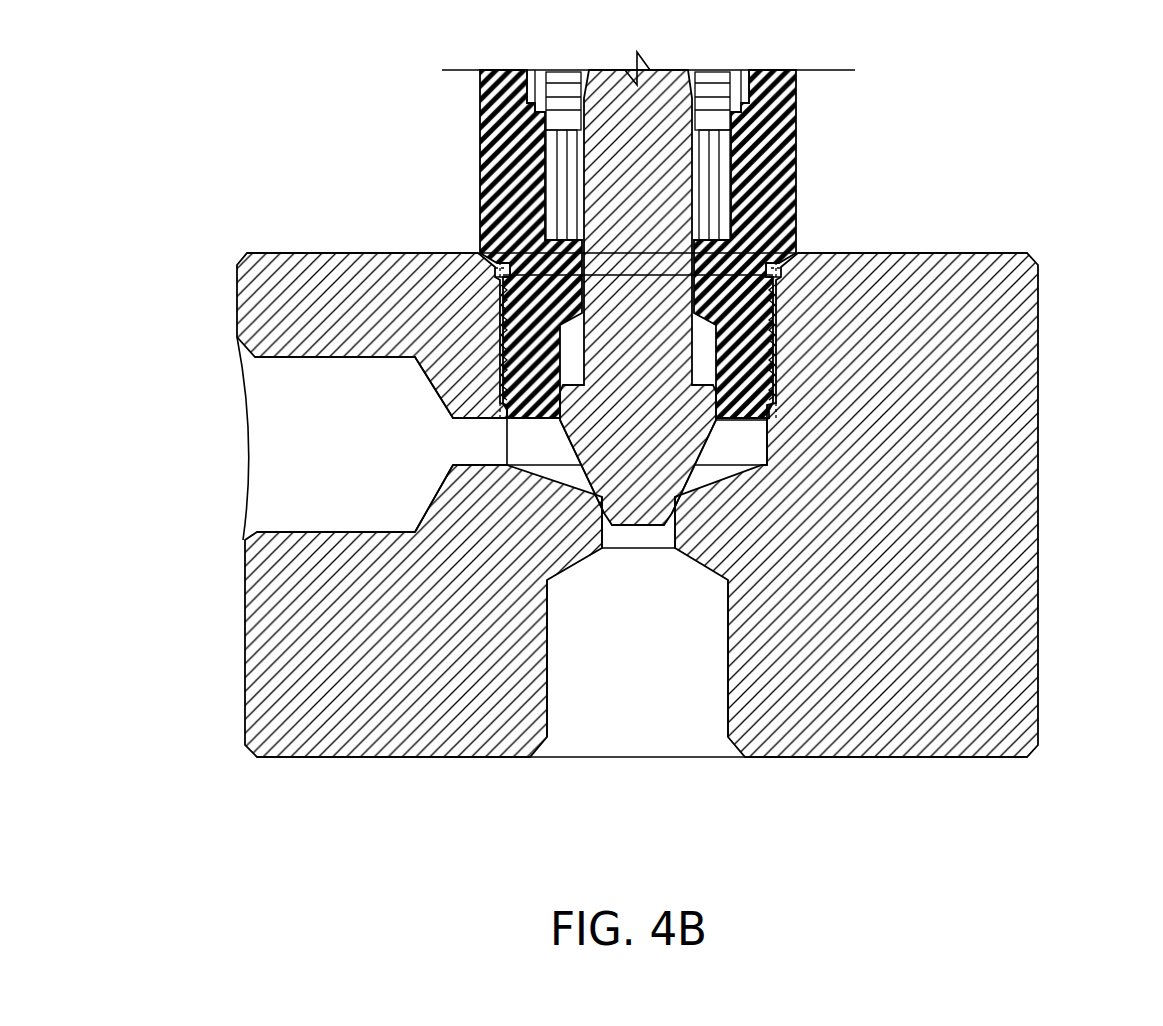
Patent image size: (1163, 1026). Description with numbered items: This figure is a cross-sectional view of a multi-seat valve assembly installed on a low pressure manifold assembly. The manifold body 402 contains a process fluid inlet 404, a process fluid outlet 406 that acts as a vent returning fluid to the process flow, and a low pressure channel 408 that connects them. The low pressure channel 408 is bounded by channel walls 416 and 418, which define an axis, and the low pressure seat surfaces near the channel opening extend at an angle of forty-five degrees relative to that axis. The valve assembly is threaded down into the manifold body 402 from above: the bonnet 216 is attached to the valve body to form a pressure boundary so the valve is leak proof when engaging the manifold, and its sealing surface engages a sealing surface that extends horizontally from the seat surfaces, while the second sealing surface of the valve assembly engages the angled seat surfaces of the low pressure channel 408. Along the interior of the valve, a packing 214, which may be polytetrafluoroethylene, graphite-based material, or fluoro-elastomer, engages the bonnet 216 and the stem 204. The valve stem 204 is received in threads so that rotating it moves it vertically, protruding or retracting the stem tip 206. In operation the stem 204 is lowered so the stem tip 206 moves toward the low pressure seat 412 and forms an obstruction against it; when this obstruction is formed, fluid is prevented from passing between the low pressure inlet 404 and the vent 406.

The valve stem 204 is at (657, 72).
The bonnet 216 is at (773, 90).
The packing 214 is at (712, 148).
The channel wall 416 is at (767, 427).
The low pressure channel 408 is at (757, 433).
The low pressure seat 412 is at (678, 497).
The manifold body 402 is at (978, 553).
The stem tip 206 is at (640, 528).
The process fluid inlet 404 is at (680, 740).
The channel wall 418 is at (500, 394).
The process fluid outlet 406 is at (292, 448).